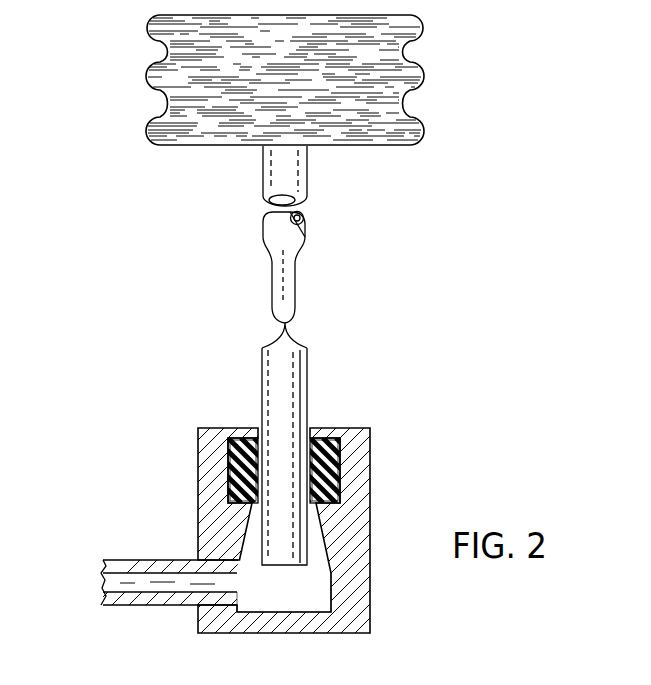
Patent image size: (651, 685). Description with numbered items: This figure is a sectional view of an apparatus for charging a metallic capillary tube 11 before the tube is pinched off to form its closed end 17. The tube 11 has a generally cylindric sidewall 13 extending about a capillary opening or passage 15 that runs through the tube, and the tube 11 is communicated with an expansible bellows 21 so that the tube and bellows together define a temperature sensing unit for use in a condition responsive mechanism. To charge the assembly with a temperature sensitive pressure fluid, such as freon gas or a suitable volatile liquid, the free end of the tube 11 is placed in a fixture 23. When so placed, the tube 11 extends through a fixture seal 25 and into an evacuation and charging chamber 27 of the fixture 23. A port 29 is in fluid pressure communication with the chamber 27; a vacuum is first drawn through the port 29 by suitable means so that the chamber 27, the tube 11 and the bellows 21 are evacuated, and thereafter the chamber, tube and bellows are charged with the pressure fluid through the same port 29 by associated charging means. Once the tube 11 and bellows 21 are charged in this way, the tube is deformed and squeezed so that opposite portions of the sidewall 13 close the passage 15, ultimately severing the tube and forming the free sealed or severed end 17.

The metallic capillary tube 11 is at (262, 229).
The cylindric sidewall 13 is at (305, 232).
The capillary opening 15 is at (312, 224).
The closed end 17 is at (290, 318).
The expansible bellows 21 is at (403, 68).
The fixture 23 is at (360, 588).
The fixture seal 25 is at (340, 482).
The evacuation and charging chamber 27 is at (274, 605).
The port 29 is at (112, 584).